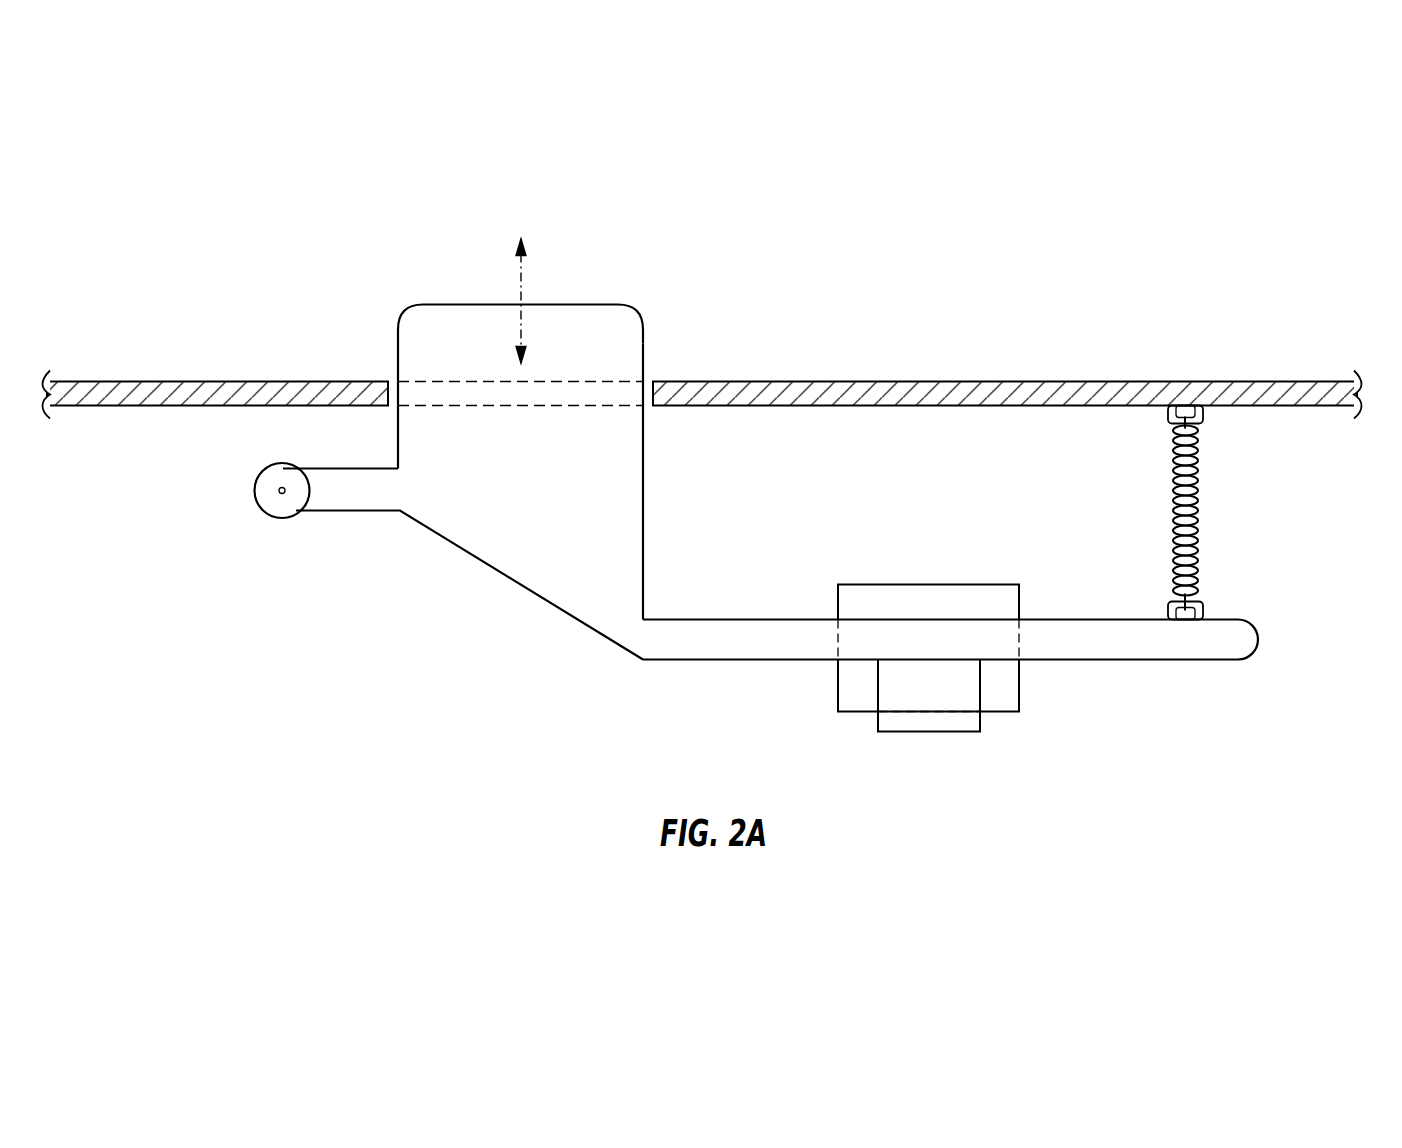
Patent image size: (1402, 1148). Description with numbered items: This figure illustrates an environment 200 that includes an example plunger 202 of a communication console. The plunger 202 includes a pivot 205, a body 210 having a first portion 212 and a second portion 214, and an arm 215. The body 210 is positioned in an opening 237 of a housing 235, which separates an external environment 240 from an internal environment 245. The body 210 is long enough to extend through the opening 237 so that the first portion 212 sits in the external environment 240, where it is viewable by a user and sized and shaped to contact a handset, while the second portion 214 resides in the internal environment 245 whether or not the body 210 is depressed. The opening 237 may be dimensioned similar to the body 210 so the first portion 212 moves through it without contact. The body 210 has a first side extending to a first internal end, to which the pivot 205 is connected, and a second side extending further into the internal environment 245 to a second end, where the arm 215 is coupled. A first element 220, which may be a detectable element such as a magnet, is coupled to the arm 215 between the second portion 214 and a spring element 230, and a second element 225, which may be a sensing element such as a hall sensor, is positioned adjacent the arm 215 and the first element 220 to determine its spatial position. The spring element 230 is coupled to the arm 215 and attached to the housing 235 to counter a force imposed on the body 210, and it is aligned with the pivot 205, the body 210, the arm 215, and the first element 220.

The environment 200 is at (1204, 203).
The plunger 202 is at (566, 621).
The pivot 205 is at (255, 492).
The body 210 is at (645, 458).
The first portion 212 is at (566, 306).
The second portion 214 is at (617, 517).
The arm 215 is at (742, 645).
The first element 220 is at (982, 723).
The second element 225 is at (1021, 685).
The spring element 230 is at (1200, 517).
The housing 235 is at (248, 383).
The opening 237 is at (392, 383).
The external environment 240 is at (144, 310).
The internal environment 245 is at (275, 669).